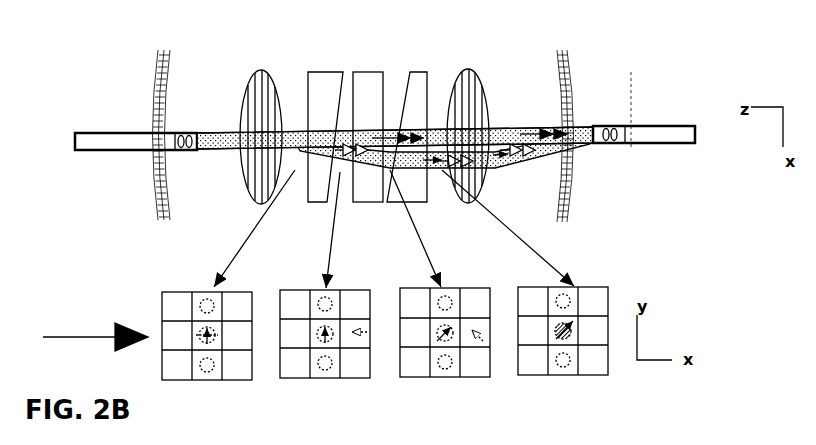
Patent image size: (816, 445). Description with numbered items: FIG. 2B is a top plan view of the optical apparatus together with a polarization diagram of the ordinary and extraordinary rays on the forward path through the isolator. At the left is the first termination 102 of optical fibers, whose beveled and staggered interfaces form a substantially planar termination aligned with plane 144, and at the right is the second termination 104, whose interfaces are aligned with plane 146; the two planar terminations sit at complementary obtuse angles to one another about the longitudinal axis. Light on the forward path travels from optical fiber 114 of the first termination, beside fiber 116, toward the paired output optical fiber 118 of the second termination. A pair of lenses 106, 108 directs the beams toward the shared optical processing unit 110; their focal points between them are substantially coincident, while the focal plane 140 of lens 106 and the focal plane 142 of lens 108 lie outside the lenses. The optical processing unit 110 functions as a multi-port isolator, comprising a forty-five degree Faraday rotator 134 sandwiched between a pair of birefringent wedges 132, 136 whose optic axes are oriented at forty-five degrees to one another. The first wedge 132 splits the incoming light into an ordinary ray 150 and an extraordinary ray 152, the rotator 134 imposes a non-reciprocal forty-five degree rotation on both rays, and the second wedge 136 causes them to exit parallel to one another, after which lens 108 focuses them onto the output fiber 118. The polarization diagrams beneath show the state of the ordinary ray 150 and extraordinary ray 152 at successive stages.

The first termination 102 is at (110, 104).
The second termination 104 is at (666, 66).
The lens 106 is at (258, 70).
The lens 108 is at (468, 68).
The optical processing unit 110 is at (368, 32).
The optical fiber 114 is at (202, 133).
The optical fiber 116 is at (95, 142).
The optical fiber 118 is at (665, 130).
The birefringent wedge 132 is at (310, 72).
The Faraday rotator 134 is at (353, 72).
The birefringent wedge 136 is at (418, 72).
The focal plane 140 is at (165, 53).
The focal plane 142 is at (560, 52).
The plane 144 is at (218, 80).
The plane 146 is at (629, 72).
The ordinary ray 150 is at (498, 130).
The extraordinary ray 152 is at (517, 157).